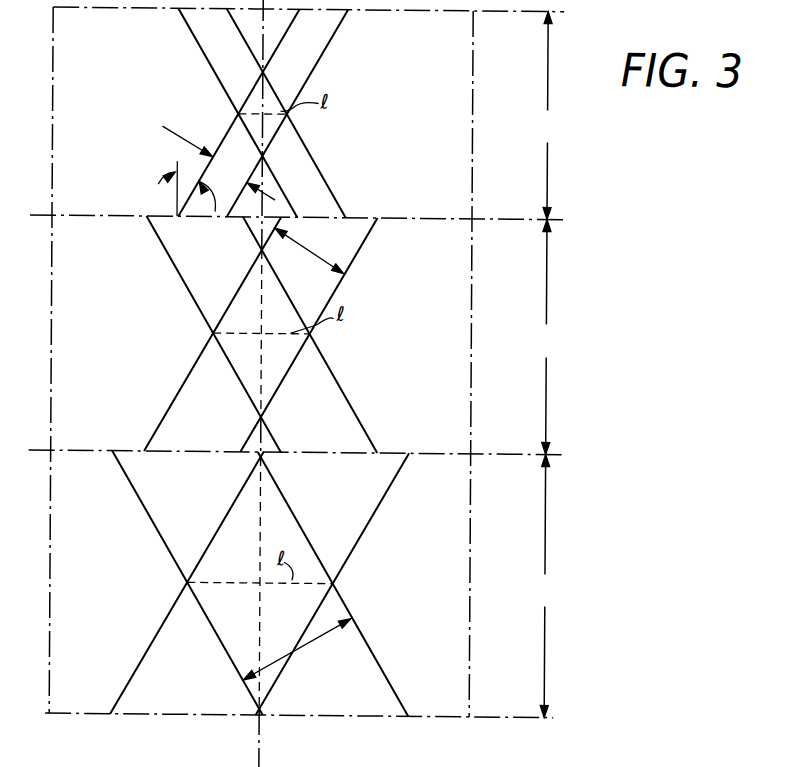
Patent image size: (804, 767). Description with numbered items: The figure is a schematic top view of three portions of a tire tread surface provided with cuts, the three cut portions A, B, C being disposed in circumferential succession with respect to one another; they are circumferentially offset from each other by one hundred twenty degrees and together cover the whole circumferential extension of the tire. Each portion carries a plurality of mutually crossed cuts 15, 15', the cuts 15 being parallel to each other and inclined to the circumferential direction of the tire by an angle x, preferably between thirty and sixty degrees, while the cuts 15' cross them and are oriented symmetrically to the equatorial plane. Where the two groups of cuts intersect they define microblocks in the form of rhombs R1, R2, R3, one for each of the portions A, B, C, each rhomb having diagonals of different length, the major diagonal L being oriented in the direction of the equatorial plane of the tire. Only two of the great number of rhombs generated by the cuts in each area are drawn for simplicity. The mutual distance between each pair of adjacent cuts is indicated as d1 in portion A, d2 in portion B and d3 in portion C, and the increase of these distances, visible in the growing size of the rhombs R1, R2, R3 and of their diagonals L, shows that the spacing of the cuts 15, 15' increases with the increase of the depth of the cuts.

The cuts 15 is at (267, 362).
The cuts 15' is at (262, 361).
The major diagonal L is at (263, 143).
The rhomb R1 is at (253, 97).
The rhomb R2 is at (248, 302).
The rhomb R3 is at (240, 532).
The mutual distance between adjacent cuts d1 is at (207, 151).
The mutual distance between adjacent cuts d2 is at (309, 251).
The mutual distance between adjacent cuts d3 is at (296, 649).
The angle x is at (187, 189).
The cut portion A is at (546, 115).
The cut portion B is at (546, 337).
The cut portion C is at (544, 586).